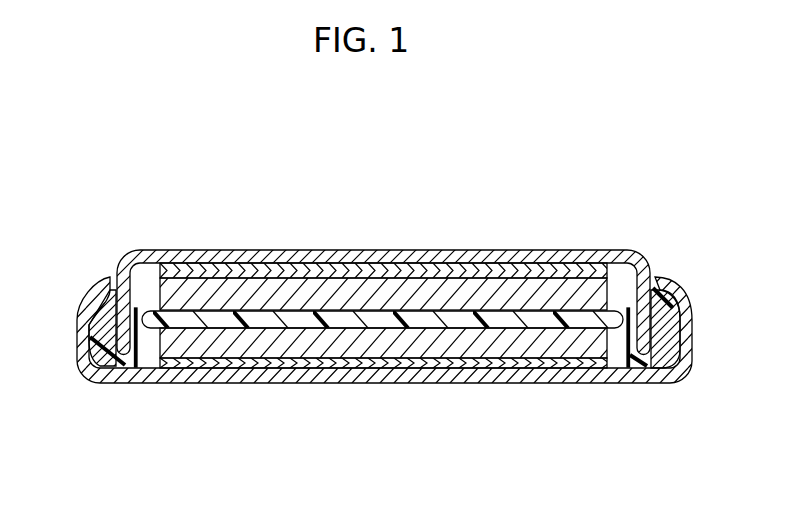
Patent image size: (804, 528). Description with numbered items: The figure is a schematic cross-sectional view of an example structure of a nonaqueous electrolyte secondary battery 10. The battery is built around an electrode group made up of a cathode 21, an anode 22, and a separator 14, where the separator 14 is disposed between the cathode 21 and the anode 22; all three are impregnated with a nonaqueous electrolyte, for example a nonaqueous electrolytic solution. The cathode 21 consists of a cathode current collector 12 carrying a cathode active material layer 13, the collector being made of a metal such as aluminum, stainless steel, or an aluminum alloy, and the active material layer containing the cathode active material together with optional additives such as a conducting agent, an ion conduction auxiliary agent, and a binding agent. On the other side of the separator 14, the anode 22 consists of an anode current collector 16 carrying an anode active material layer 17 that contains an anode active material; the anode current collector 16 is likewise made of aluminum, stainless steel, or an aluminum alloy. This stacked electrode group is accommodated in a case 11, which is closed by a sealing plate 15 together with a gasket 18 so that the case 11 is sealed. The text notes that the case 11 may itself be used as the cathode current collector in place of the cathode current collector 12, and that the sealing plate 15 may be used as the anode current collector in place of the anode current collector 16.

The nonaqueous electrolyte secondary battery 10 is at (612, 150).
The case 11 is at (204, 376).
The cathode current collector 12 is at (463, 452).
The cathode active material layer 13 is at (466, 346).
The separator 14 is at (552, 318).
The sealing plate 15 is at (182, 254).
The anode current collector 16 is at (437, 272).
The anode active material layer 17 is at (435, 165).
The gasket 18 is at (679, 372).
The cathode 21 is at (383, 411).
The anode 22 is at (383, 218).